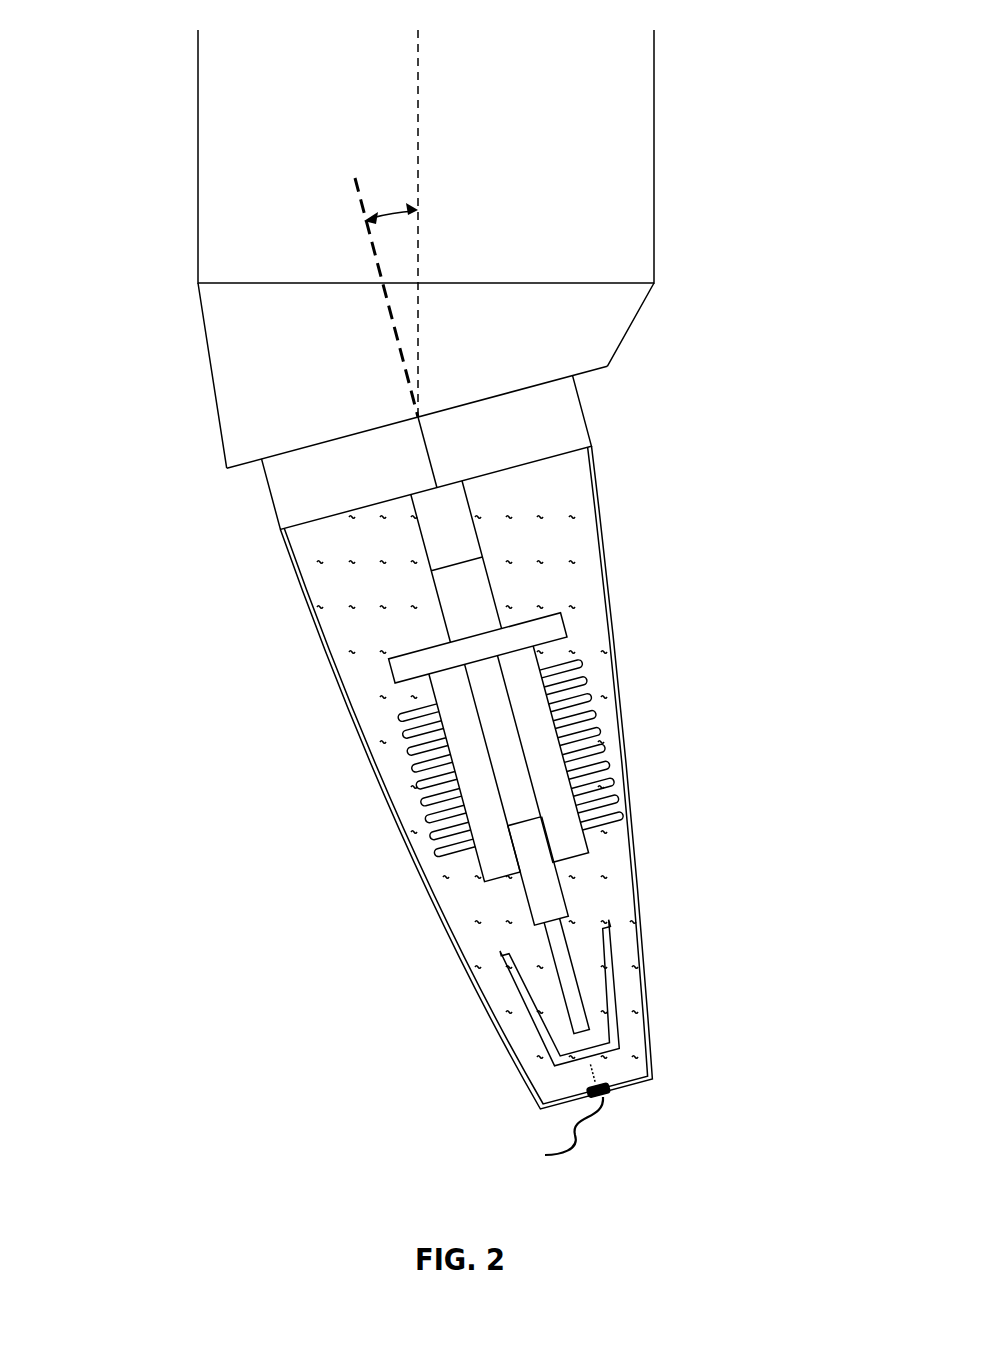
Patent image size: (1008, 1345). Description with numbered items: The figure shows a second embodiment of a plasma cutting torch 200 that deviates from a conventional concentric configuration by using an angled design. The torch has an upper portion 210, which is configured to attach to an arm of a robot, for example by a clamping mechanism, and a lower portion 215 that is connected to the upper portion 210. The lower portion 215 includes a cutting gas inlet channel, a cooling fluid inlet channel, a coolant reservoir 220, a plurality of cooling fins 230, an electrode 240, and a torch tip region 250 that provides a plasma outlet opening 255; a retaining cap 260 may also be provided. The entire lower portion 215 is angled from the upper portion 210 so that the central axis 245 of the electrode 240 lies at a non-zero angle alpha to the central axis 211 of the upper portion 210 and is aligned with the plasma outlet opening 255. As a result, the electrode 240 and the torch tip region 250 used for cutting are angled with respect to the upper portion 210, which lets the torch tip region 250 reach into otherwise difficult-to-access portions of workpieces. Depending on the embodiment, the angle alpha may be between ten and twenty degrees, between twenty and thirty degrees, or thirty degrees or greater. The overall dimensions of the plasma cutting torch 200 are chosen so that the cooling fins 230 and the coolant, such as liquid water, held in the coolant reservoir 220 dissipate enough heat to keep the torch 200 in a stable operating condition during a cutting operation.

The plasma cutting torch 200 is at (755, 115).
The upper portion 210 is at (145, 27).
The central axis of the upper portion 211 is at (418, 148).
The lower portion 215 is at (255, 467).
The coolant reservoir 220 is at (553, 558).
The cooling fins 230 is at (600, 715).
The electrode 240 is at (572, 993).
The central axis of the electrode 245 is at (418, 362).
The torch tip region 250 is at (612, 1096).
The plasma outlet opening 255 is at (554, 1135).
The retaining cap 260 is at (648, 812).